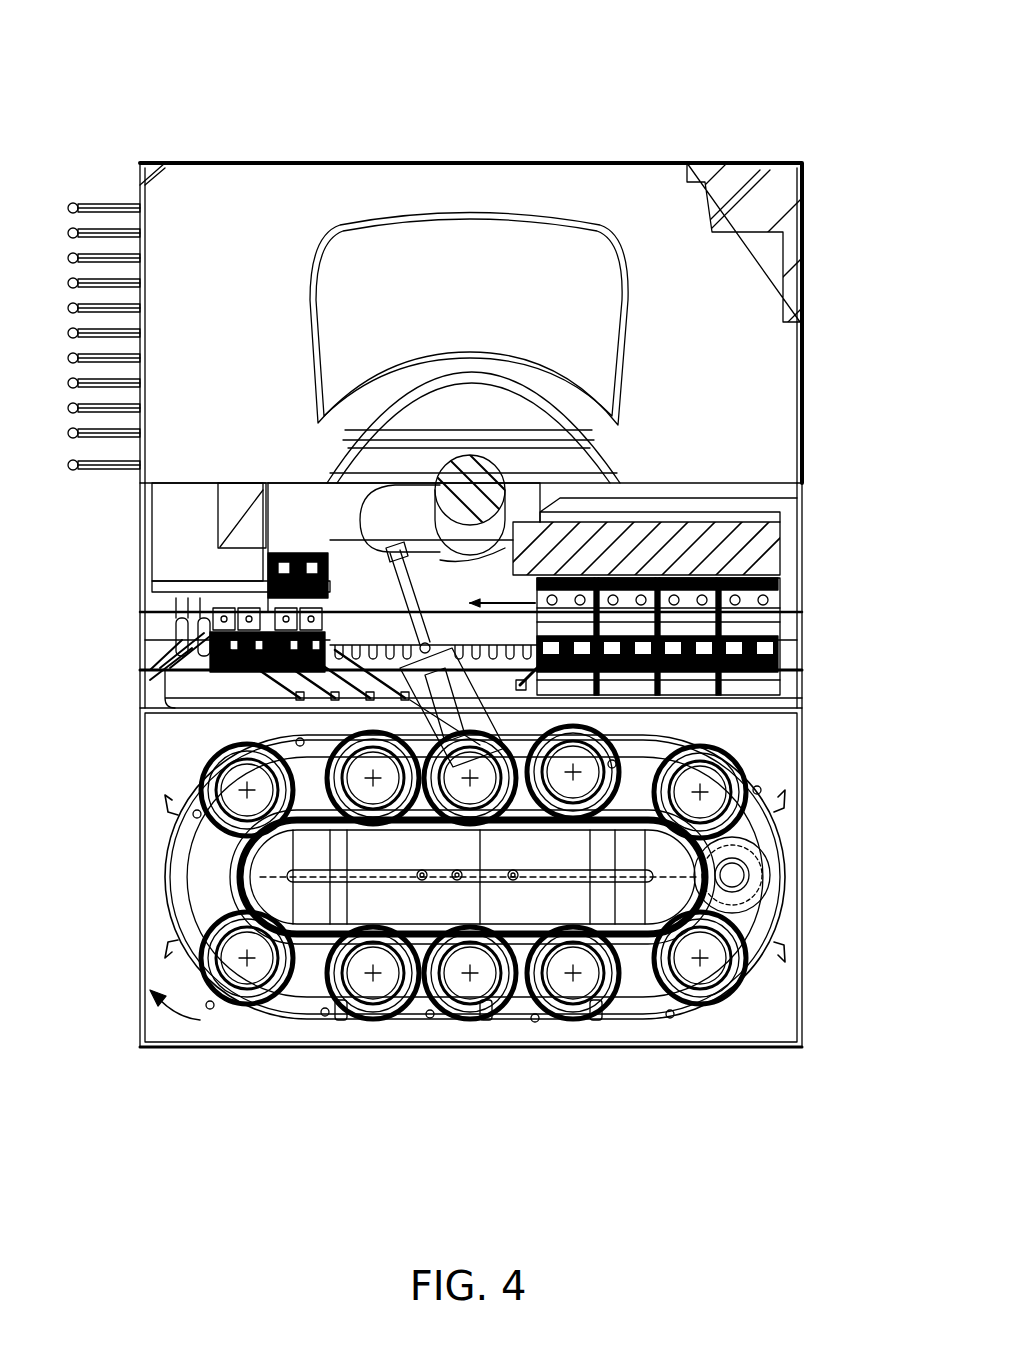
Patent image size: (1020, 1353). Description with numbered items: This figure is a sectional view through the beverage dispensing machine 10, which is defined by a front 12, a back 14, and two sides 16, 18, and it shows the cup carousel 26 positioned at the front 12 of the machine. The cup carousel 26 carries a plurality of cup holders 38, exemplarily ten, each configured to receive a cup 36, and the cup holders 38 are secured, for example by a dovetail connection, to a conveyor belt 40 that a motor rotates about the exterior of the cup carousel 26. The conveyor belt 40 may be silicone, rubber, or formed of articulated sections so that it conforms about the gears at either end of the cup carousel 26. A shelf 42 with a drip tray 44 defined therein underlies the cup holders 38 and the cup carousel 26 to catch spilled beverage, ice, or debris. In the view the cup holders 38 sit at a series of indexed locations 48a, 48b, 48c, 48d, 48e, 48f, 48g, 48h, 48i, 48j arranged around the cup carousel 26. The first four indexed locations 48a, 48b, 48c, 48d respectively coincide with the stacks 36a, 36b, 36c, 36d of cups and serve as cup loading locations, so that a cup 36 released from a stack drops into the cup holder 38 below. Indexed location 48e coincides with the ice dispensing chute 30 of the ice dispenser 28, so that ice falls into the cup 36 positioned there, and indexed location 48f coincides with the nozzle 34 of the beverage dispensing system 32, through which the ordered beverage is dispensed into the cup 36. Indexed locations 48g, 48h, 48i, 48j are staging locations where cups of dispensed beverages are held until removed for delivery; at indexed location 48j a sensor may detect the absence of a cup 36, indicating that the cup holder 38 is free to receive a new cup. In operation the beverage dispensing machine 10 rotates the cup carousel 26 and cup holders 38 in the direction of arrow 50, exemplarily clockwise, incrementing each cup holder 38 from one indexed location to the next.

The beverage dispensing machine 10 is at (808, 76).
The front 12 is at (630, 1150).
The back 14 is at (618, 163).
The side 16 is at (104, 547).
The side 18 is at (838, 403).
The cup carousel 26 is at (808, 748).
The ice dispenser 28 is at (378, 492).
The ice dispensing chute 30 is at (482, 818).
The beverage dispensing system 32 is at (562, 550).
The nozzle 34 is at (580, 823).
The cup 36 is at (322, 722).
The stack of cups 36a is at (373, 1030).
The stack of cups 36b is at (247, 1030).
The stack of cups 36c is at (196, 810).
The stack of cups 36d is at (373, 805).
The cup holder 38 is at (292, 740).
The conveyor belt 40 is at (228, 877).
The shelf 42 is at (787, 897).
The drip tray 44 is at (758, 845).
The indexed location 48a is at (398, 1030).
The indexed location 48b is at (287, 1030).
The indexed location 48c is at (250, 815).
The indexed location 48d is at (330, 812).
The indexed location 48e is at (418, 812).
The indexed location 48f is at (573, 812).
The indexed location 48g is at (702, 790).
The indexed location 48h is at (725, 1030).
The indexed location 48i is at (598, 1030).
The indexed location 48j is at (495, 1030).
The arrow 50 is at (160, 1022).